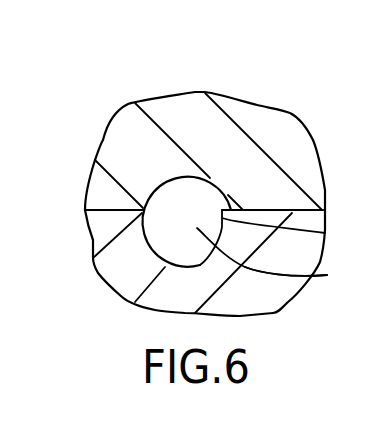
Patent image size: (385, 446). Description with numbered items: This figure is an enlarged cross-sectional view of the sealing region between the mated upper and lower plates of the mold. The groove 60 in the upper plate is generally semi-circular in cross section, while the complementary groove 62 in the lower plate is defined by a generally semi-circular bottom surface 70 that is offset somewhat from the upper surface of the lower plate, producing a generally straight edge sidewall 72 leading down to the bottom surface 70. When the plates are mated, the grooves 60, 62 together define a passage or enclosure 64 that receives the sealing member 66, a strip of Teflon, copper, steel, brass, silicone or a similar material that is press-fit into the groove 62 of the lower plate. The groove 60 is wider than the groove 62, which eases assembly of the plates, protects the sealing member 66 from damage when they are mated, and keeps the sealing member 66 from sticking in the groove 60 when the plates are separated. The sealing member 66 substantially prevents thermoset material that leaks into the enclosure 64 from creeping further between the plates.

The groove 60 is at (218, 178).
The groove 62 is at (273, 315).
The enclosure 64 is at (154, 259).
The sealing member 66 is at (313, 277).
The bottom surface 70 is at (176, 268).
The sidewall 72 is at (323, 233).